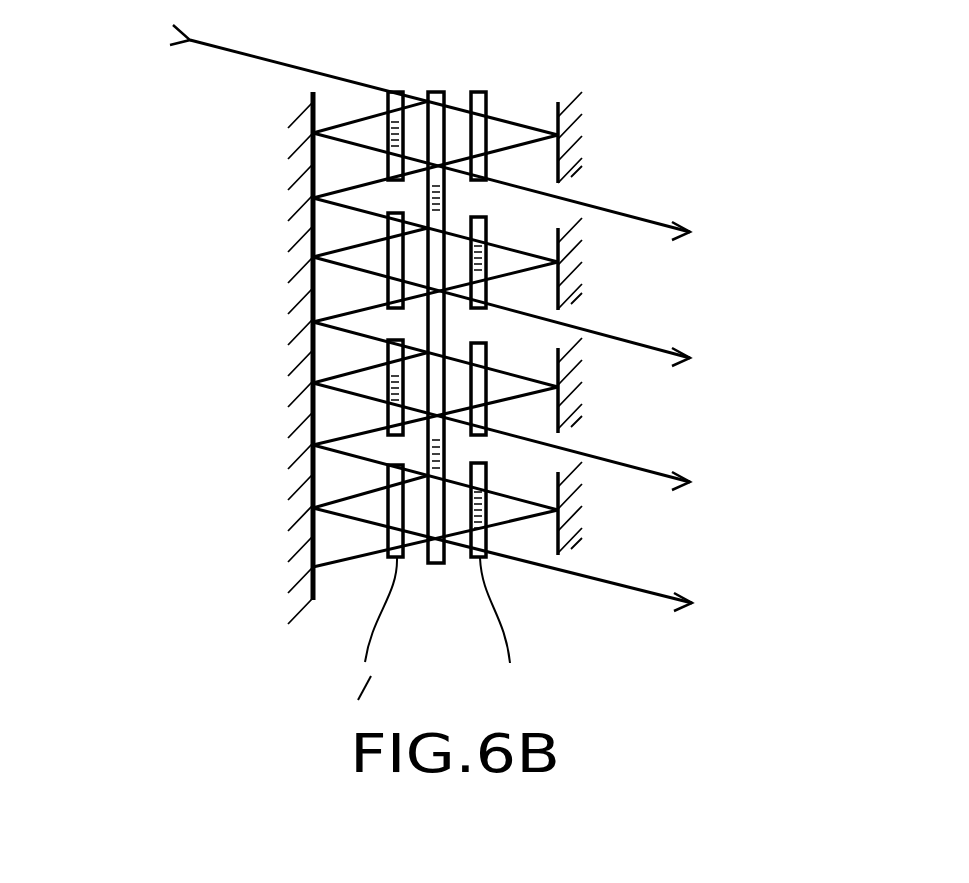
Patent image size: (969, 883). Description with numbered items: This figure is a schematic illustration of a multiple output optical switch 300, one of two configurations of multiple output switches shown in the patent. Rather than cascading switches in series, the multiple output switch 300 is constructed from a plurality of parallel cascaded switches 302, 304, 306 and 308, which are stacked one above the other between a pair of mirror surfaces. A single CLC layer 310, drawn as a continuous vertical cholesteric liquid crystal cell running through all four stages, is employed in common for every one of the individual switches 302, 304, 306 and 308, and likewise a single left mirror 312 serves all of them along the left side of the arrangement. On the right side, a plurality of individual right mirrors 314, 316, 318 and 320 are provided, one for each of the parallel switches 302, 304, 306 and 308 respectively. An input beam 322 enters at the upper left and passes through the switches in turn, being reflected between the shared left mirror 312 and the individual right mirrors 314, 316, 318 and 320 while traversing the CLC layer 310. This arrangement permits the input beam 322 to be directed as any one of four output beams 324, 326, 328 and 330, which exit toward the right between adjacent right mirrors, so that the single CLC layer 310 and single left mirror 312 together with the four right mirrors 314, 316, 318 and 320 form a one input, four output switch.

The multiple output switch 300 is at (618, 59).
The parallel cascaded switch 302 is at (262, 146).
The parallel cascaded switch 304 is at (272, 280).
The parallel cascaded switch 306 is at (270, 386).
The parallel cascaded switch 308 is at (278, 517).
The CLC layer 310 is at (436, 562).
The left mirror 312 is at (312, 210).
The right mirror 314 is at (567, 141).
The right mirror 316 is at (566, 279).
The right mirror 318 is at (568, 405).
The right mirror 320 is at (566, 528).
The input beam 322 is at (214, 46).
The output beam 324 is at (618, 215).
The output beam 326 is at (636, 340).
The output beam 328 is at (638, 464).
The output beam 330 is at (640, 590).